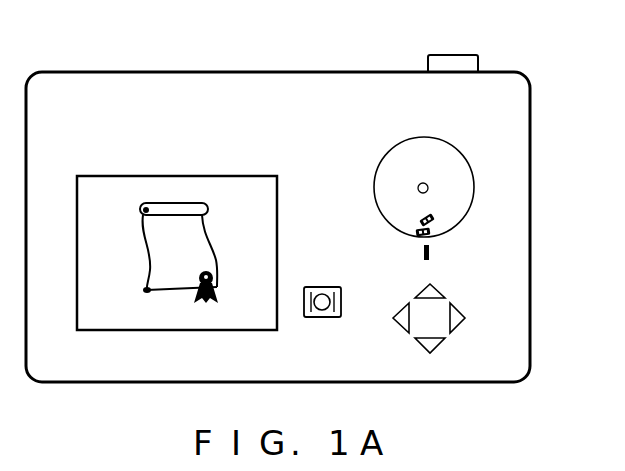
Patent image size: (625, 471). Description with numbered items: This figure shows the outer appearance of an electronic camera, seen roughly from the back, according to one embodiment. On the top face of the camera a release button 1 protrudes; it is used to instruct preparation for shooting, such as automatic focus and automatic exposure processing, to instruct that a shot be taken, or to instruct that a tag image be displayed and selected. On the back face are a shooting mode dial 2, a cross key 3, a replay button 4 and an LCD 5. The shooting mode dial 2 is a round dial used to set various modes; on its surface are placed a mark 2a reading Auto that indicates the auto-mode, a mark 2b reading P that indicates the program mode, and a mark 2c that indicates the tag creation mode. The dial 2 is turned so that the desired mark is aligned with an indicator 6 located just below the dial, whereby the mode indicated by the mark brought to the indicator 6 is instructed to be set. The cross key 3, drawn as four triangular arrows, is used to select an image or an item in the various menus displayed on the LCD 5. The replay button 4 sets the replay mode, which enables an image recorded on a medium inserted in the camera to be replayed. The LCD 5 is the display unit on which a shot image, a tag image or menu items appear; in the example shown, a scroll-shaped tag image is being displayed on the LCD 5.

The release button 1 is at (434, 55).
The shooting mode dial 2 is at (432, 136).
The mark (Auto) 2a is at (455, 175).
The mark (P) 2b is at (462, 210).
The mark indicating tag creation mode 2c is at (437, 232).
The cross key 3 is at (472, 277).
The replay button 4 is at (322, 287).
The LCD 5 is at (246, 176).
The indicator 6 is at (421, 250).